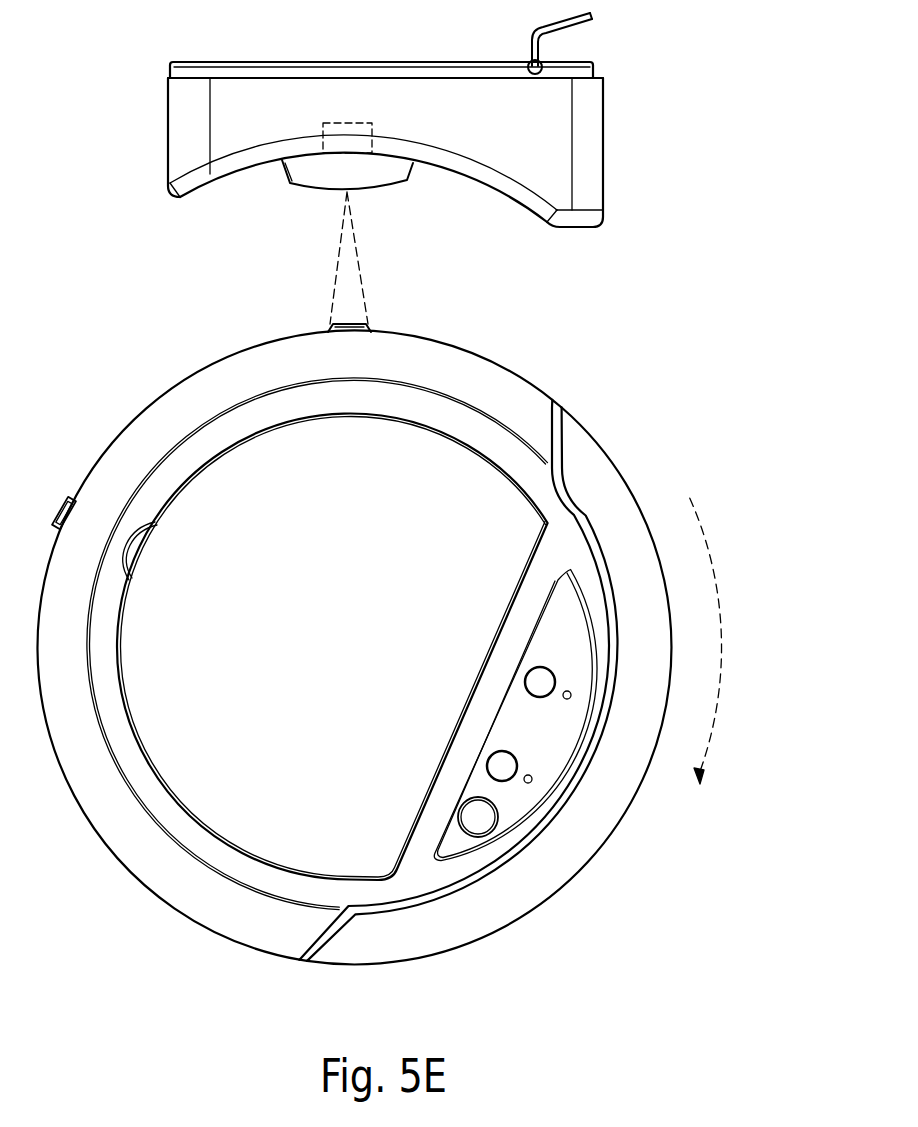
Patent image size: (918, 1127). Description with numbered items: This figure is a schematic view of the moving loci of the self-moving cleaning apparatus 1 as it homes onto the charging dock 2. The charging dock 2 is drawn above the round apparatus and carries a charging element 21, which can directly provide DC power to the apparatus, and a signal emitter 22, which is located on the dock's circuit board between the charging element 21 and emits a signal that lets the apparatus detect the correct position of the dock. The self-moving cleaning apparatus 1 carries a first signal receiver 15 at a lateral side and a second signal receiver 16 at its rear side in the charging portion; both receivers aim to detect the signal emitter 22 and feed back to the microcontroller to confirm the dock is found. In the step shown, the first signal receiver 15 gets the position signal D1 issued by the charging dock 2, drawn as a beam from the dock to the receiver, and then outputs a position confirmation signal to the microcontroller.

The self-moving cleaning apparatus 1 is at (589, 427).
The charging dock 2 is at (604, 127).
The first signal receiver 15 is at (330, 330).
The second signal receiver 16 is at (58, 497).
The charging element 21 is at (297, 170).
The signal emitter 22 is at (341, 122).
The position signal D1 is at (360, 257).